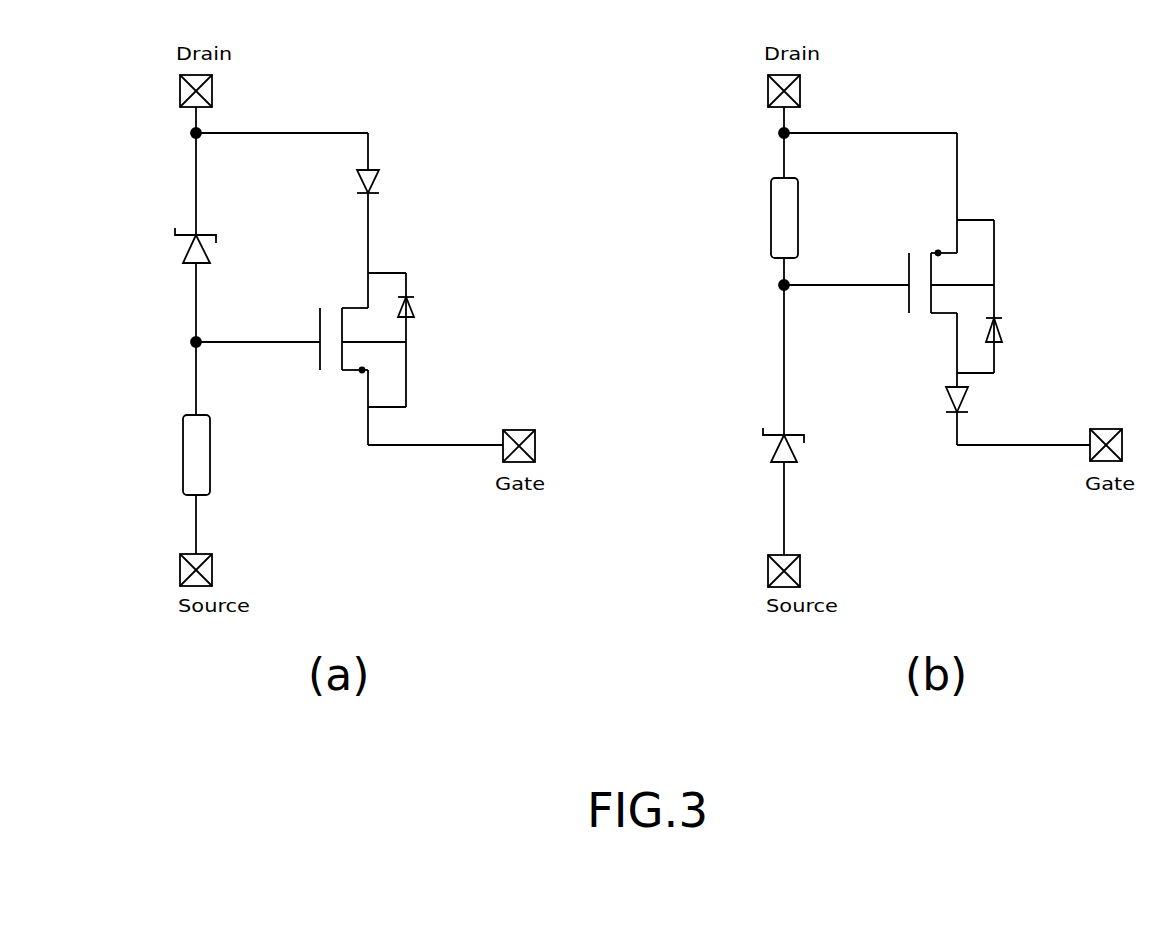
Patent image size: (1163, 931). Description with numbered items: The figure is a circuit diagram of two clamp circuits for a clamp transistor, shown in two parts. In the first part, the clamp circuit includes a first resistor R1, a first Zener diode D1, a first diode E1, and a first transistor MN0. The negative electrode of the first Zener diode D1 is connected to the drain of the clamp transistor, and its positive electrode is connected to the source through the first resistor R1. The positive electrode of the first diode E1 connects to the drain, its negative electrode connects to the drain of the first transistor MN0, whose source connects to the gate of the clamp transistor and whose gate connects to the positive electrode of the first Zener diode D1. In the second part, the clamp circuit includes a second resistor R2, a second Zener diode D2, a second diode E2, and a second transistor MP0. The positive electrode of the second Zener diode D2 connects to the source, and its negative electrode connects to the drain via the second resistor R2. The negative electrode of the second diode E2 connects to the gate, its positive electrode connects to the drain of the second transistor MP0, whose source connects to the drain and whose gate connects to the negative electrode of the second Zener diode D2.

The first Zener diode D1 is at (177, 245).
The first diode E1 is at (384, 183).
The first transistor MN0 is at (354, 359).
The first resistor R1 is at (175, 455).
The second resistor R2 is at (767, 218).
The second transistor MP0 is at (947, 303).
The second diode E2 is at (973, 401).
The second Zener diode D2 is at (764, 445).